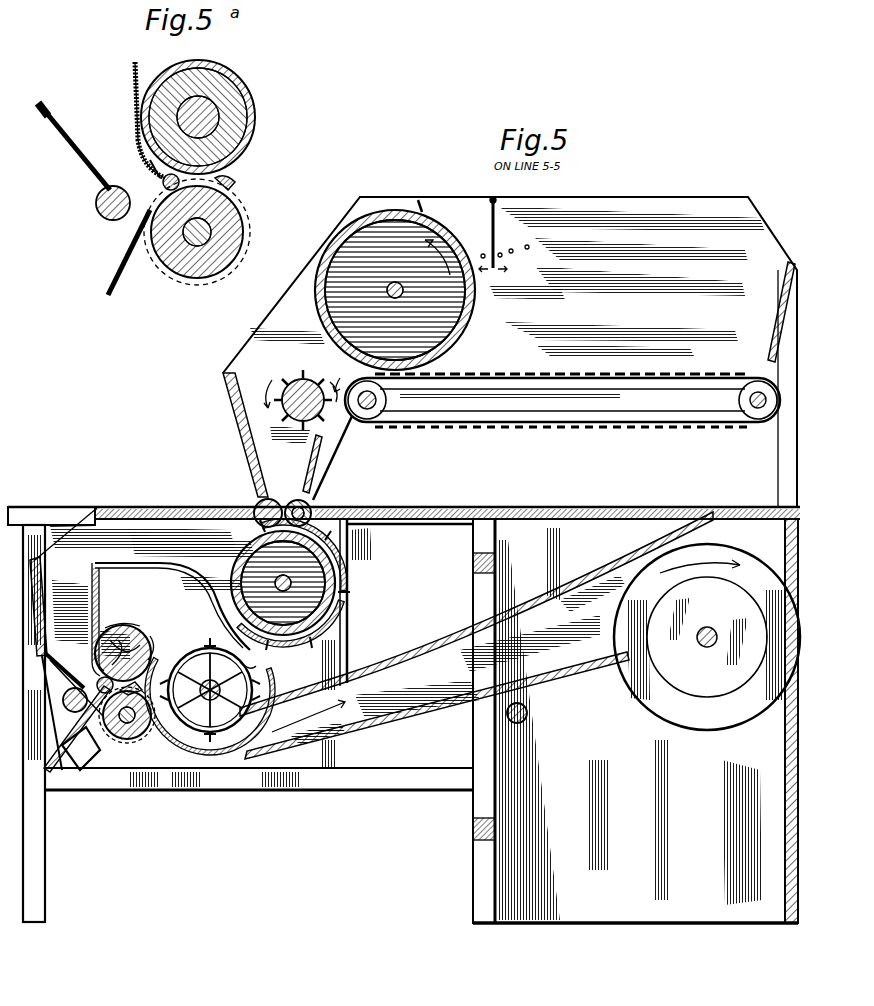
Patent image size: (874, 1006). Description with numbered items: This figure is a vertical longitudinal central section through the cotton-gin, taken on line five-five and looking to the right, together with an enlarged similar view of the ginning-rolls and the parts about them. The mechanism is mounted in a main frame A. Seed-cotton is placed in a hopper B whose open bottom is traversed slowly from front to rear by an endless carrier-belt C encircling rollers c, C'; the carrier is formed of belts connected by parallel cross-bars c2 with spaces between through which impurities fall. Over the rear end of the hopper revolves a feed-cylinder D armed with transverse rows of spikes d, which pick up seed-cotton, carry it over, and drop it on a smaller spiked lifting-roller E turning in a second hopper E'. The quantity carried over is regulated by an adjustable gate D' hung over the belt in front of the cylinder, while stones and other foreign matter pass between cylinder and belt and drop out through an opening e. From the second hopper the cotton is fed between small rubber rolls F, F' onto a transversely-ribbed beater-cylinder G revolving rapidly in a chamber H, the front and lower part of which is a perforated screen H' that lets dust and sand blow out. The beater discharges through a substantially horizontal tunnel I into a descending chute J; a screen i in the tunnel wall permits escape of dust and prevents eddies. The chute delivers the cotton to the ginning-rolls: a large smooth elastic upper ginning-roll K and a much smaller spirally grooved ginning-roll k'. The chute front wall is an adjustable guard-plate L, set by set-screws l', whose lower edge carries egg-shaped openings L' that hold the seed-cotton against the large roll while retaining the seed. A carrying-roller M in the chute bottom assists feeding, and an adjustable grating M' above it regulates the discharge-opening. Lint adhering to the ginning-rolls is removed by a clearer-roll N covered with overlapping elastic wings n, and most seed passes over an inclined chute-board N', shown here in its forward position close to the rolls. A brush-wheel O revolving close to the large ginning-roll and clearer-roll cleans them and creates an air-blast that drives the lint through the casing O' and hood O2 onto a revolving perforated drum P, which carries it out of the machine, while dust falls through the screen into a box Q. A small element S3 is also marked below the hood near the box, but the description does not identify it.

In FIG. 5, the main frame A is at (62, 496).
In FIG. 5, the hopper B is at (510, 352).
In FIG. 5, the carrier-belt C is at (562, 386).
In FIG. 5, the roller c is at (748, 410).
In FIG. 5, the roller C' is at (359, 416).
In FIG. 5, the cross-bars c2 is at (478, 375).
In FIG. 5, the feed-cylinder D is at (400, 290).
In FIG. 5, the adjustable gate D' is at (504, 234).
In FIG. 5, the spikes or teeth d is at (419, 204).
In FIG. 5, the lifting-roller E is at (300, 390).
In FIG. 5, the second hopper E' is at (295, 464).
In FIG. 5, the opening e is at (330, 445).
In FIG. 5, the rubber roll F is at (252, 499).
In FIG. 5, the rubber roll F' is at (320, 501).
In FIG. 5, the beater-cylinder G is at (250, 552).
In FIG. 5, the beater-chamber H is at (321, 555).
In FIG. 5, the perforated screen H' is at (306, 633).
In FIG. 5, the tunnel I is at (211, 643).
In FIG. 5, the screen i is at (86, 528).
In FIG. 5A, the descending chute J is at (67, 71).
In FIG. 5, the descending chute J is at (46, 663).
In FIG. 5A, the upper ginning-roll K is at (251, 108).
In FIG. 5, the upper ginning-roll K is at (140, 636).
In FIG. 5A, the guard-plate L is at (136, 120).
In FIG. 5, the guard-plate L is at (85, 619).
In FIG. 5A, the egg-shaped openings L' is at (141, 163).
In FIG. 5A, the set-screws l' is at (162, 184).
In FIG. 5, the set-screws l' is at (97, 683).
In FIG. 5A, the carrying-roller M is at (94, 203).
In FIG. 5, the carrying-roller M is at (65, 699).
In FIG. 5A, the adjustable grating M' is at (74, 146).
In FIG. 5, the adjustable grating M' is at (64, 670).
In FIG. 5A, the clearer-roll N is at (197, 240).
In FIG. 5, the clearer-roll N is at (127, 725).
In FIG. 5A, the inclined chute-board N' is at (122, 252).
In FIG. 5, the inclined chute-board N' is at (77, 736).
In FIG. 5A, the ribs or wings n is at (233, 184).
In FIG. 5, the ribs or wings n is at (140, 690).
In FIG. 5, the smaller ginning-roll k' is at (76, 701).
In FIG. 5, the brush-wheel O is at (210, 696).
In FIG. 5, the brush-wheel casing O' is at (270, 673).
In FIG. 5, the hood O2 is at (476, 635).
In FIG. 5, the perforated drum P is at (658, 600).
In FIG. 5, the box Q is at (635, 721).
In FIG. 5, the shaft S3 is at (530, 716).